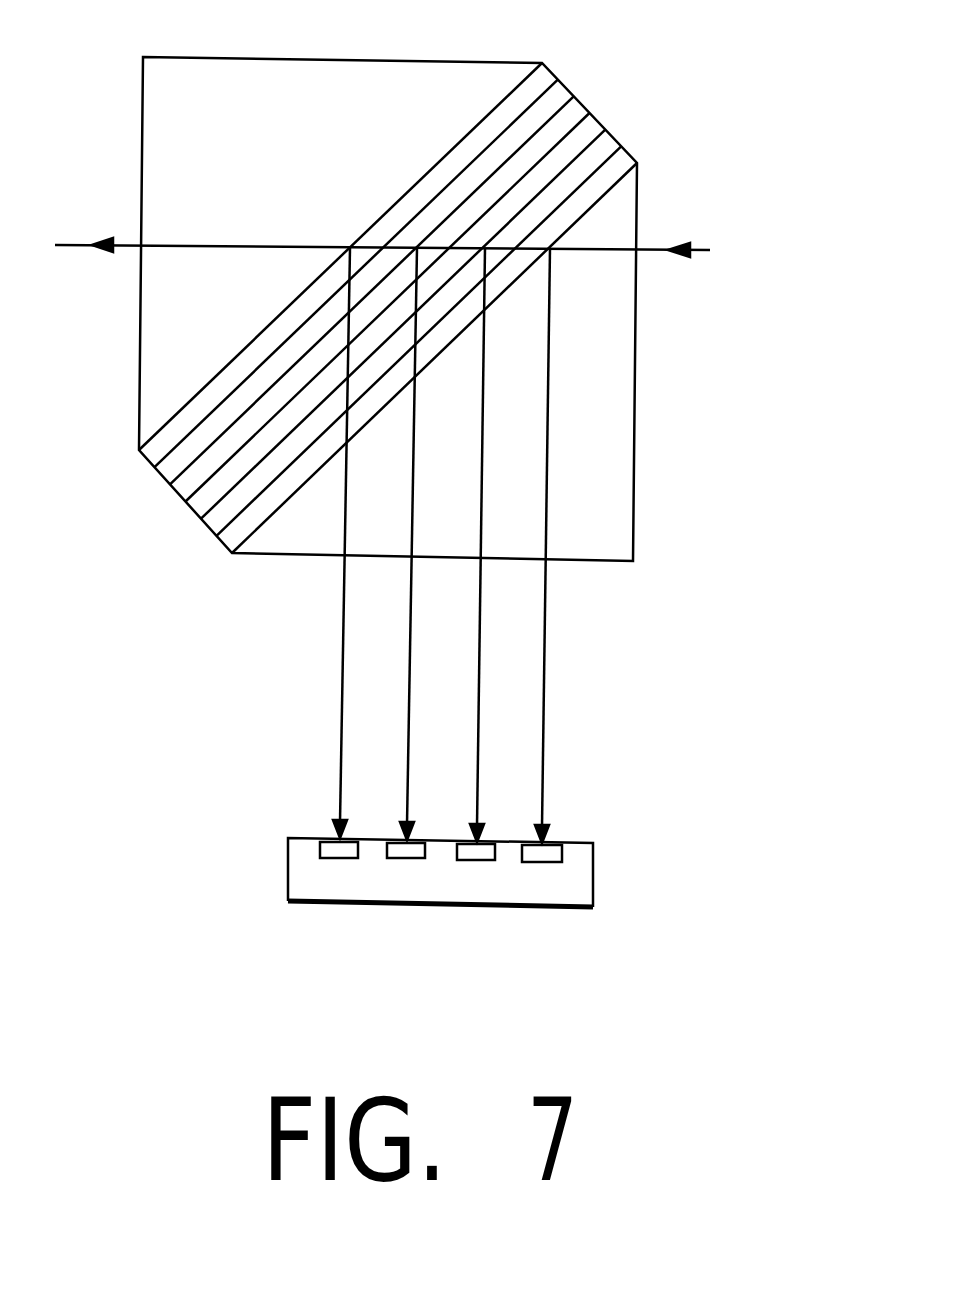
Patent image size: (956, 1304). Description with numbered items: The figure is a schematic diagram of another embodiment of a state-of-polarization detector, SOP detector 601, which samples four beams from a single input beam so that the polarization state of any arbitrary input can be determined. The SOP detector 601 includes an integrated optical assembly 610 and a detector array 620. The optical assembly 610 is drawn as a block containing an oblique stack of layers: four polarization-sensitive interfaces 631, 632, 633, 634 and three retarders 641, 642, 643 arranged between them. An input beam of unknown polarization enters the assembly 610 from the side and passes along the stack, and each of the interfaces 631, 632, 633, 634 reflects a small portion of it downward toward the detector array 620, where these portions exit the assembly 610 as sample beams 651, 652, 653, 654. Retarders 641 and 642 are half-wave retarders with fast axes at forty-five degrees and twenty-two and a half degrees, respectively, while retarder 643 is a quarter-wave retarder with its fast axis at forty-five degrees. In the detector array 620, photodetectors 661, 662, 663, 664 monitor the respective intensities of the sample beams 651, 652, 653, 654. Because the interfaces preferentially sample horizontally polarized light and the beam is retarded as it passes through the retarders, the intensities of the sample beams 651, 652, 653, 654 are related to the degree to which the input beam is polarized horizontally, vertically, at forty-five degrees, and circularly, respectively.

The SOP detector 601 is at (727, 698).
The integrated optical assembly 610 is at (192, 35).
The detector array 620 is at (288, 858).
The polarization-sensitive interface 631 is at (237, 542).
The polarization-sensitive interface 632 is at (213, 503).
The polarization-sensitive interface 633 is at (183, 468).
The polarization-sensitive interface 634 is at (177, 412).
The half-wave retarder 641 is at (619, 160).
The half-wave retarder 642 is at (582, 128).
The quarter-wave retarder 643 is at (556, 92).
The sample beam 651 is at (543, 788).
The sample beam 652 is at (480, 602).
The sample beam 653 is at (412, 687).
The sample beam 654 is at (342, 607).
The photodetector 661 is at (543, 862).
The photodetector 662 is at (480, 860).
The photodetector 663 is at (410, 860).
The photodetector 664 is at (338, 860).